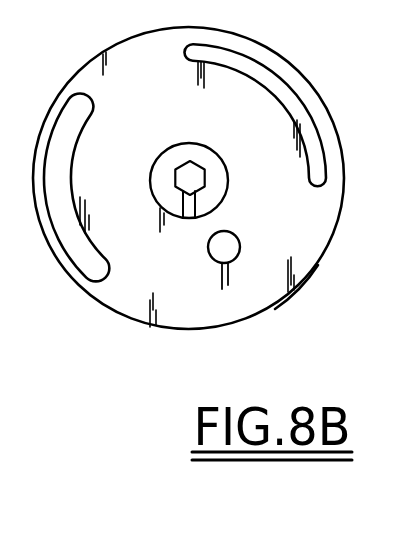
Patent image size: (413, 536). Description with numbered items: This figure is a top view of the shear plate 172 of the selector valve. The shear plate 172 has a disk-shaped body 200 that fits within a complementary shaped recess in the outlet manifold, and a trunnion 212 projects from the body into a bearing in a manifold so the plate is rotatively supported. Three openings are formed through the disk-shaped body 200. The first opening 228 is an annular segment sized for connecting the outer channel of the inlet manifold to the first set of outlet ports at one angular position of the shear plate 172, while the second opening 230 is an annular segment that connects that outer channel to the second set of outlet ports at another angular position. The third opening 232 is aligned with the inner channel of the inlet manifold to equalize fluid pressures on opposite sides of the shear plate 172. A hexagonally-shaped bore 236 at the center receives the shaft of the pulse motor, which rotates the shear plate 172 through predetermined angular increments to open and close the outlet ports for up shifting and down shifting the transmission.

The disk-shaped body 200 is at (183, 278).
The shear plate 172 is at (299, 288).
The trunnion 212 is at (217, 151).
The first opening 228 is at (280, 95).
The second opening 230 is at (68, 142).
The third opening 232 is at (238, 243).
The hexagonally-shaped bore 236 is at (198, 177).